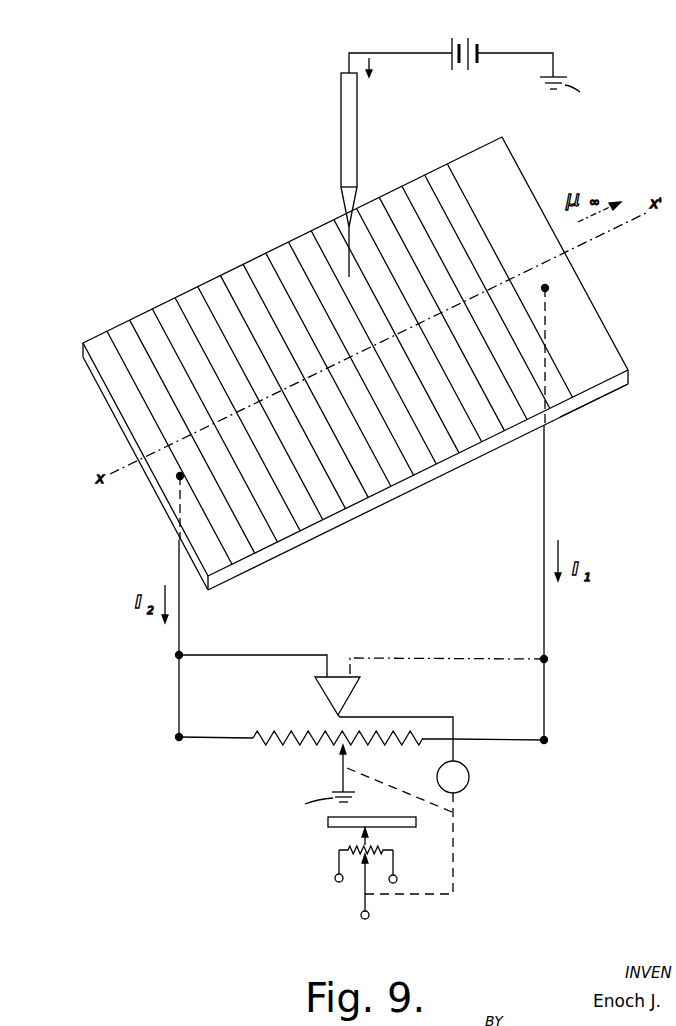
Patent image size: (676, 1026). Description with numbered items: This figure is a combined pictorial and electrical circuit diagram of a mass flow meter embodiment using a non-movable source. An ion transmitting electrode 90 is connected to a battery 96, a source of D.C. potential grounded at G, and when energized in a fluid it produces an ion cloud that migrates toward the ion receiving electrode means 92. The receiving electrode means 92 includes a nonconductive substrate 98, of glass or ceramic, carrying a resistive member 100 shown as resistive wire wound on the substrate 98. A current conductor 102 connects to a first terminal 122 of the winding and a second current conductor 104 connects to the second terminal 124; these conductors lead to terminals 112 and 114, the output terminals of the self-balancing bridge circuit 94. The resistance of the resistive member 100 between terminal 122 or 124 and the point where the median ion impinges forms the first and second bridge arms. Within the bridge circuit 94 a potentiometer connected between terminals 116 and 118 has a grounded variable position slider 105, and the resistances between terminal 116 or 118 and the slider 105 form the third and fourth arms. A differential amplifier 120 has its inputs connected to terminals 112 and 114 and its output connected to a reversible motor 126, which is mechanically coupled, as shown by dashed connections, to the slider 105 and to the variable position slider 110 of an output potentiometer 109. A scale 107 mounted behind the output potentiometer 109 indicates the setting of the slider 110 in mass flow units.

The ion transmitting electrode 90 is at (358, 134).
The ion receiving electrode means 92 is at (505, 187).
The bridge circuit 94 is at (513, 716).
The battery 96 is at (472, 43).
The nonconductive substrate 98 is at (618, 391).
The resistive member 100 is at (247, 327).
The current conductor 102 is at (546, 503).
The second current conductor 104 is at (181, 624).
The variable position slider 105 is at (341, 757).
The scale 107 is at (328, 820).
The output potentiometer 109 is at (388, 840).
The variable position slider 110 is at (361, 886).
The terminal 112 is at (548, 659).
The terminal 114 is at (175, 655).
The terminal 116 is at (548, 740).
The terminal 118 is at (175, 737).
The differential amplifier 120 is at (353, 693).
The first terminal 122 is at (548, 287).
The second terminal 124 is at (180, 476).
The reversible motor 126 is at (470, 777).